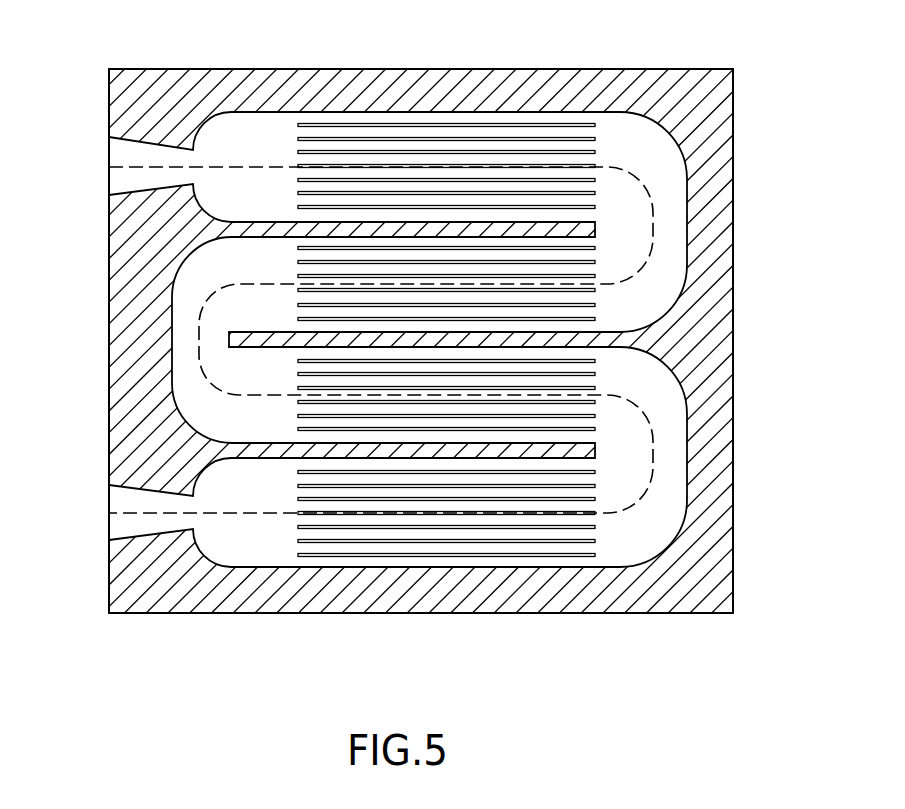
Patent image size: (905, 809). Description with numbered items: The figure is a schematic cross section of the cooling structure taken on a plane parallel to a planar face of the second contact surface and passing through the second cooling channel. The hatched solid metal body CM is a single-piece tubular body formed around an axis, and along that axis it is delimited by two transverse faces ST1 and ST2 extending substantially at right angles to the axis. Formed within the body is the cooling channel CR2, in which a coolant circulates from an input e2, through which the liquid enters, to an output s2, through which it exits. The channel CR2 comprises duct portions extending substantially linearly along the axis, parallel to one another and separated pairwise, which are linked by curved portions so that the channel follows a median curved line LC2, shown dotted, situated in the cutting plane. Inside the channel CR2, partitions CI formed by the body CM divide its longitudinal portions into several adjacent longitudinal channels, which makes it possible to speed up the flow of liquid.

The solid metal body CM is at (740, 148).
The transverse face ST1 is at (109, 352).
The transverse face ST2 is at (735, 365).
The cooling channel CR2 is at (672, 235).
The input e2 is at (150, 160).
The output s2 is at (142, 508).
The partitions CI is at (363, 138).
The median curved line LC2 is at (247, 514).